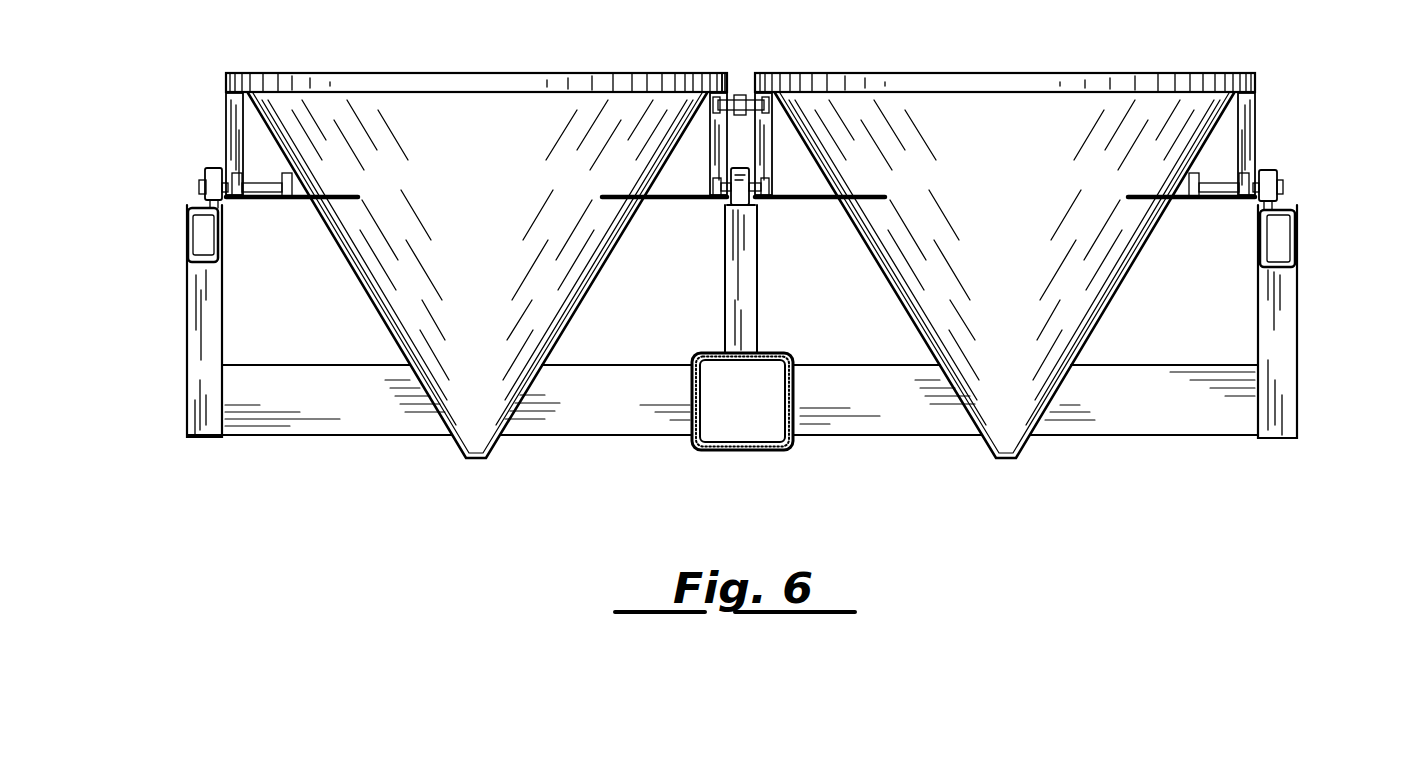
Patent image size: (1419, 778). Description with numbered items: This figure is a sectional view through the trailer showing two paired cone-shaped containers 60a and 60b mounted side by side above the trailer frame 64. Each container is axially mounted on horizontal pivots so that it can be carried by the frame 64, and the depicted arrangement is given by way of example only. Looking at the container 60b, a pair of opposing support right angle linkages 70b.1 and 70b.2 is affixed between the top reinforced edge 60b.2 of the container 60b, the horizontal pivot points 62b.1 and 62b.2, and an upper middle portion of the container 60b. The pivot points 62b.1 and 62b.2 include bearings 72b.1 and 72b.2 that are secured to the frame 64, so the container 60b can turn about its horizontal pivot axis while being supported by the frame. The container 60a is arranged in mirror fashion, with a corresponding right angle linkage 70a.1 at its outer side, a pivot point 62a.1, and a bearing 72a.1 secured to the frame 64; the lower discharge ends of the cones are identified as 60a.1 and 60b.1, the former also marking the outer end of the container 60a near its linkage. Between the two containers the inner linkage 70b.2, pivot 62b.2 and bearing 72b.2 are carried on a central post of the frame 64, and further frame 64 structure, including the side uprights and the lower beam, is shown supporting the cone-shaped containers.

The cone-shaped container 60a is at (980, 73).
The cone-shaped container 60b is at (455, 73).
The right hopper conical discharge section 60a.1 is at (1256, 82).
The left hopper conical discharge section 60b.1 is at (478, 460).
The top reinforced edge 60b.2 is at (730, 73).
The right mounting bolt 62a.1 is at (1283, 187).
The horizontal pivot point 62b.1 is at (200, 185).
The horizontal pivot point 62b.2 is at (735, 207).
The frame 64 is at (205, 265).
The right mounting bracket 70a.1 is at (1256, 117).
The support right angle linkage 70b.1 is at (226, 118).
The support right angle linkage 70b.2 is at (710, 132).
The right nut 72a.1 is at (1270, 170).
The bearing 72b.1 is at (210, 170).
The bearing 72b.2 is at (722, 198).